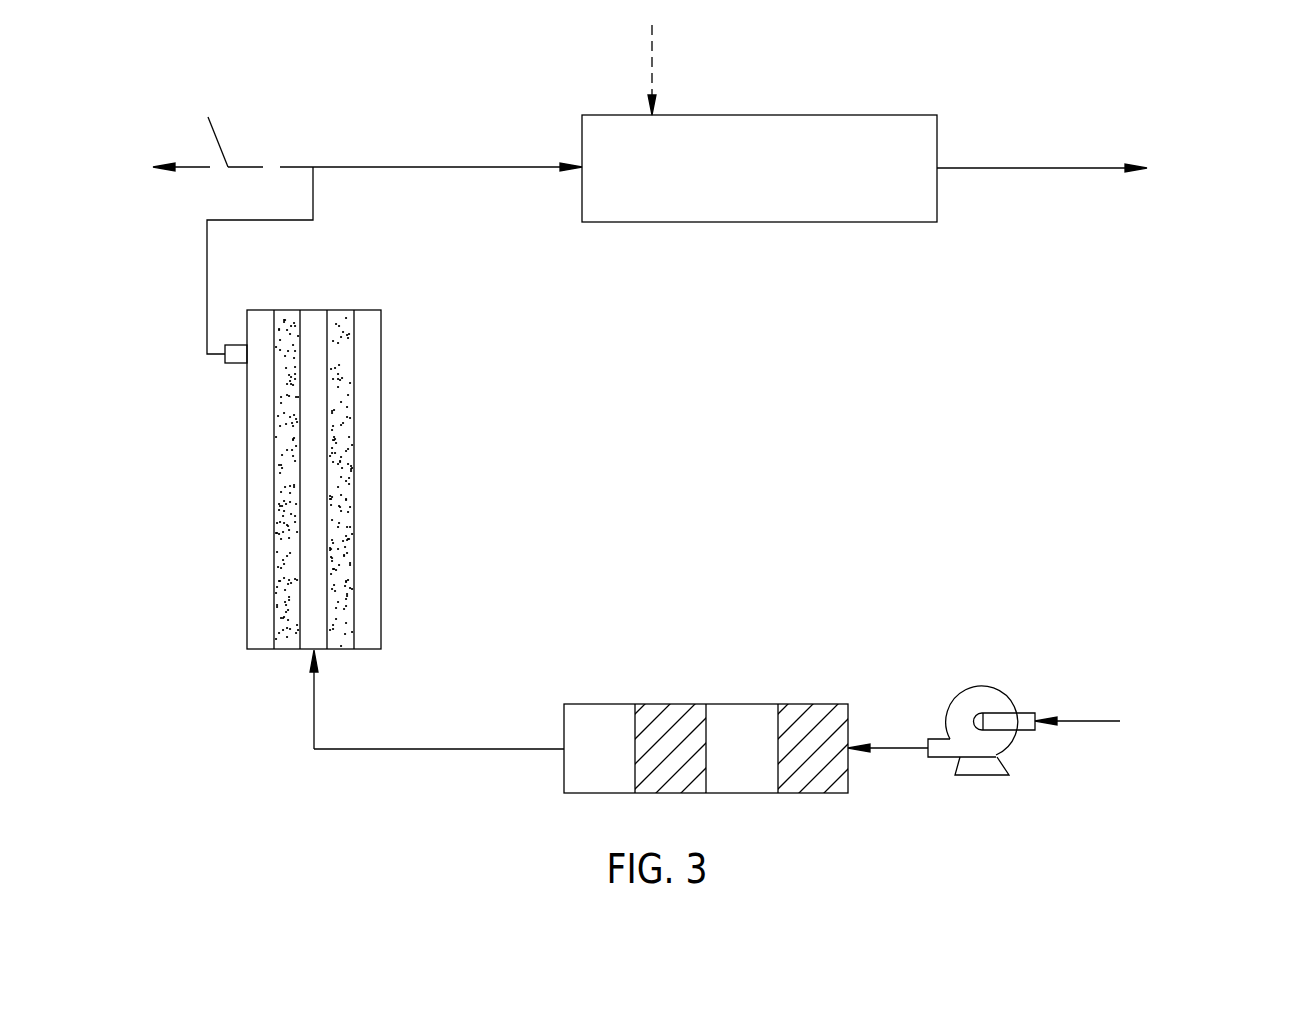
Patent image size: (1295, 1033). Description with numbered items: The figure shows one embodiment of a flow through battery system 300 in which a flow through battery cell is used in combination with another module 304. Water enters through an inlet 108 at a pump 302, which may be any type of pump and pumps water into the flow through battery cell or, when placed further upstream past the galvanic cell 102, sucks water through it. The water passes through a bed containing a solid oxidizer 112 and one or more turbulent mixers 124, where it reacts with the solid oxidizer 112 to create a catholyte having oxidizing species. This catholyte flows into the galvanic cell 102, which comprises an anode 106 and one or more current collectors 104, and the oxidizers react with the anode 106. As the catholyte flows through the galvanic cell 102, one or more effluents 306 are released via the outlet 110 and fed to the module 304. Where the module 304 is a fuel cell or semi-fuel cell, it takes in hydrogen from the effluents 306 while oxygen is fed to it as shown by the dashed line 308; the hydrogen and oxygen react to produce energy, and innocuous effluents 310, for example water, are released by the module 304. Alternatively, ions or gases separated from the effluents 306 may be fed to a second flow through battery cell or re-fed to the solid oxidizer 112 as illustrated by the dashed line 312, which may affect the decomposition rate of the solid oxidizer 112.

The system 300 is at (1239, 108).
The pump 302 is at (980, 686).
The module 304 is at (757, 223).
The effluents 306 is at (450, 167).
The dashed line 308 is at (652, 54).
The innocuous effluents 310 is at (1023, 168).
The dashed line 312 is at (244, 170).
The galvanic cell 102 is at (398, 490).
The current collectors 104 is at (260, 310).
The anode 106 is at (315, 310).
The inlet 108 is at (1025, 713).
The outlet 110 is at (233, 365).
The solid oxidizer 112 is at (669, 704).
The turbulent mixers 124 is at (598, 704).